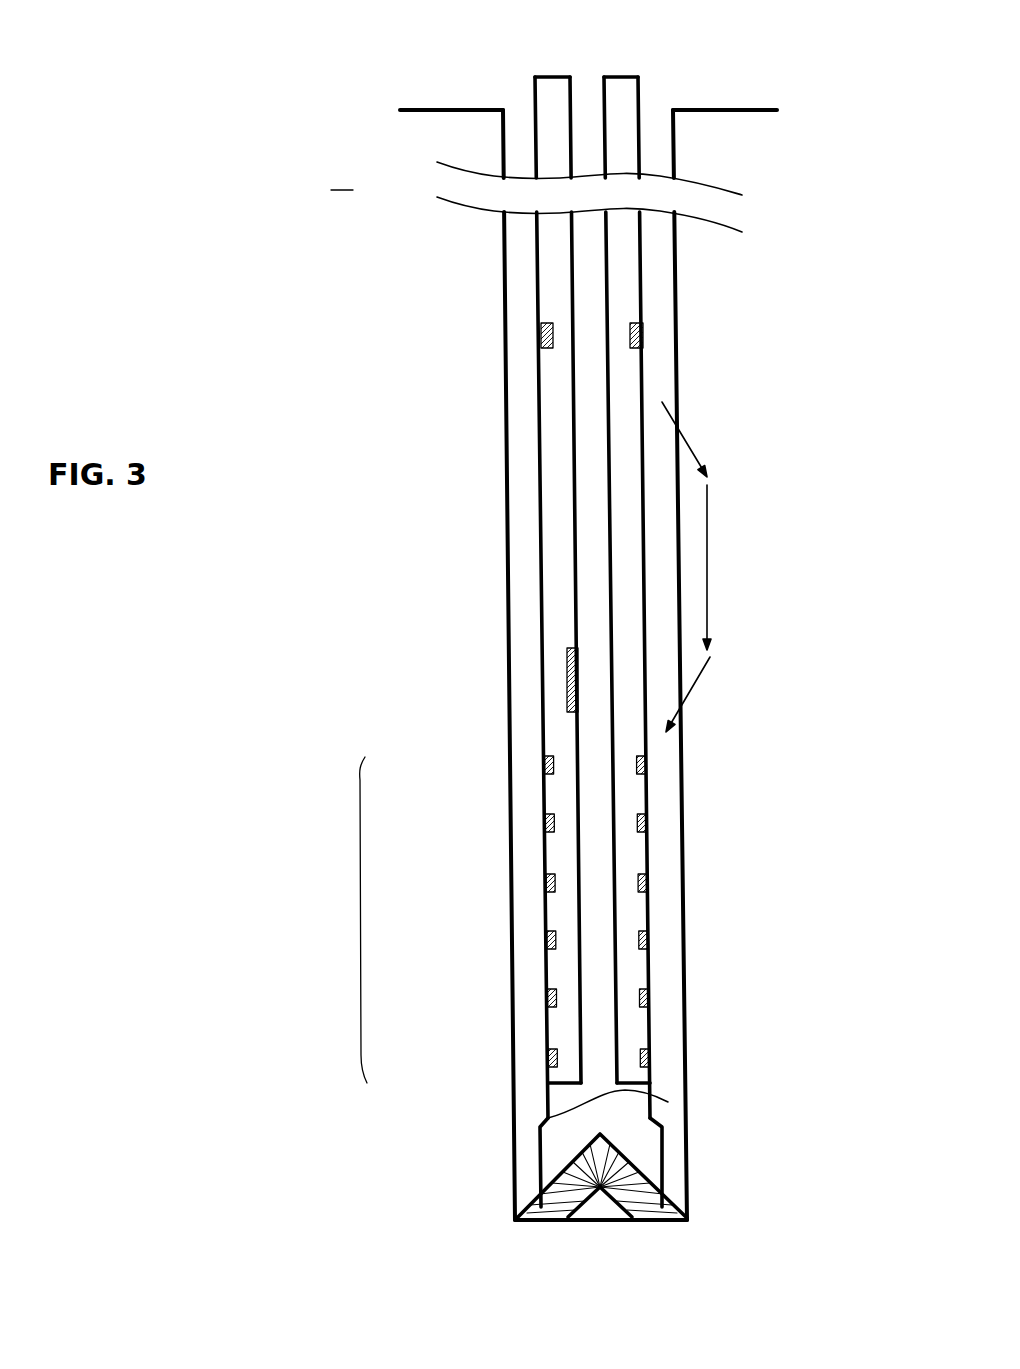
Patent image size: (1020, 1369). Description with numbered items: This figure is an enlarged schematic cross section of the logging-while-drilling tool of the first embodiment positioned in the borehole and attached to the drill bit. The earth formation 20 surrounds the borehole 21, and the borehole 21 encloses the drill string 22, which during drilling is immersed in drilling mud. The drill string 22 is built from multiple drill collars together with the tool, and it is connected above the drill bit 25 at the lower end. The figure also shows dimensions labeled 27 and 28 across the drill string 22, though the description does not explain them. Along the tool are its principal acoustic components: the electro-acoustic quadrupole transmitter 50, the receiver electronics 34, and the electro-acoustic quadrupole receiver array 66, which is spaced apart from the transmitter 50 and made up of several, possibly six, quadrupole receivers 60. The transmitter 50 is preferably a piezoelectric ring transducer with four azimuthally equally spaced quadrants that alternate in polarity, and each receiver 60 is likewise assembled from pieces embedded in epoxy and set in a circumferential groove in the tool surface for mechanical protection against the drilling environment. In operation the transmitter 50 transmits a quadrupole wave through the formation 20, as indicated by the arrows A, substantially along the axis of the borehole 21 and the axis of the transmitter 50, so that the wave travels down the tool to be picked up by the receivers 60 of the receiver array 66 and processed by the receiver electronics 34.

The earth formation 20 is at (343, 180).
The borehole 21 is at (519, 118).
The drill string 22 is at (537, 175).
The drill bit 25 is at (567, 1168).
The dual tubing string 27 is at (533, 61).
The tubing wall thickness / bore 28 is at (545, 94).
The receiver electronics 34 is at (567, 678).
The electro-acoustic quadrupole transmitter 50 is at (542, 337).
The quadrupole receiver 60 is at (546, 769).
The electro-acoustic quadrupole receiver array 66 is at (333, 920).
The arrows indicating quadrupole wave transmission A is at (707, 548).